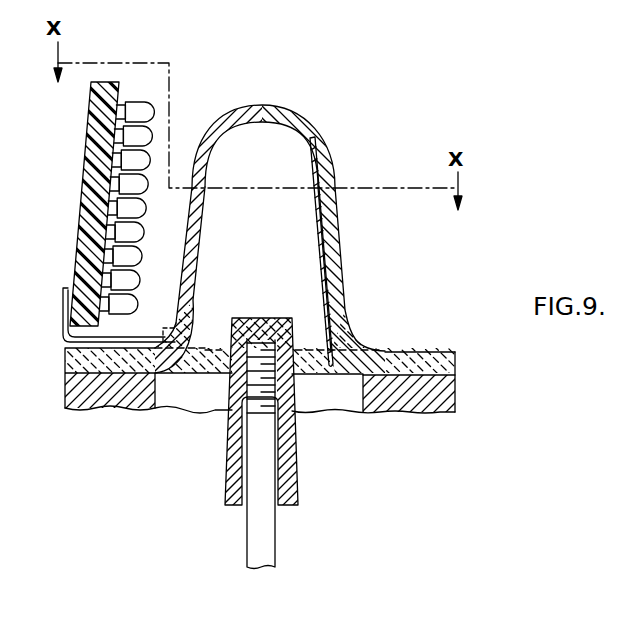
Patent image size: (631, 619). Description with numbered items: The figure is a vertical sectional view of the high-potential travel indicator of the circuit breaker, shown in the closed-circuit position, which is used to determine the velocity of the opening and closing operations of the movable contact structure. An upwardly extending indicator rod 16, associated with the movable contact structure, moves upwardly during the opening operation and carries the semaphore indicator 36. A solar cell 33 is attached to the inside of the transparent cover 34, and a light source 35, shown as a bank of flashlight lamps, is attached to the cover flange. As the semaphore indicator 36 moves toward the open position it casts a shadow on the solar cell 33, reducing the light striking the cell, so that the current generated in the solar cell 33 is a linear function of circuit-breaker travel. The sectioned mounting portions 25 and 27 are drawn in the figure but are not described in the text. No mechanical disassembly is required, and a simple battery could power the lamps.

The indicator rod 16 is at (258, 544).
The base plate 25 is at (363, 396).
The support block 27 is at (457, 396).
The solar cell 33 is at (334, 246).
The transparent cover 34 is at (344, 280).
The light source 35 is at (83, 232).
The semaphore indicator 36 is at (297, 464).